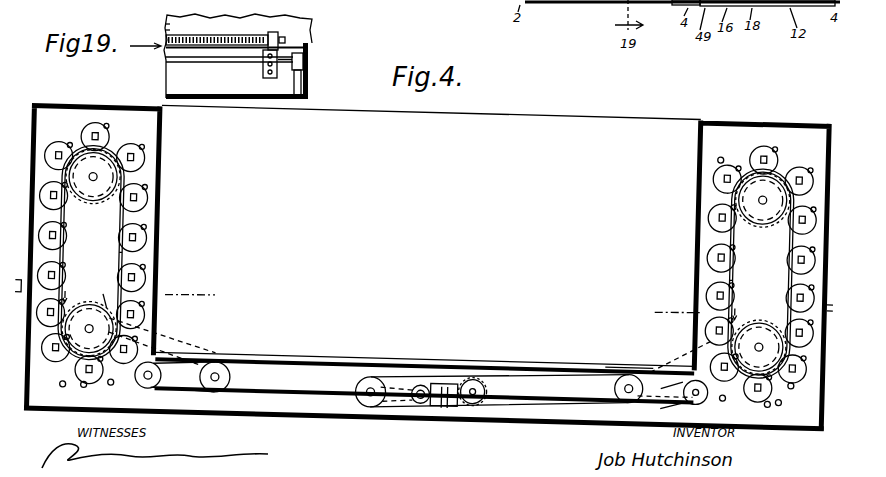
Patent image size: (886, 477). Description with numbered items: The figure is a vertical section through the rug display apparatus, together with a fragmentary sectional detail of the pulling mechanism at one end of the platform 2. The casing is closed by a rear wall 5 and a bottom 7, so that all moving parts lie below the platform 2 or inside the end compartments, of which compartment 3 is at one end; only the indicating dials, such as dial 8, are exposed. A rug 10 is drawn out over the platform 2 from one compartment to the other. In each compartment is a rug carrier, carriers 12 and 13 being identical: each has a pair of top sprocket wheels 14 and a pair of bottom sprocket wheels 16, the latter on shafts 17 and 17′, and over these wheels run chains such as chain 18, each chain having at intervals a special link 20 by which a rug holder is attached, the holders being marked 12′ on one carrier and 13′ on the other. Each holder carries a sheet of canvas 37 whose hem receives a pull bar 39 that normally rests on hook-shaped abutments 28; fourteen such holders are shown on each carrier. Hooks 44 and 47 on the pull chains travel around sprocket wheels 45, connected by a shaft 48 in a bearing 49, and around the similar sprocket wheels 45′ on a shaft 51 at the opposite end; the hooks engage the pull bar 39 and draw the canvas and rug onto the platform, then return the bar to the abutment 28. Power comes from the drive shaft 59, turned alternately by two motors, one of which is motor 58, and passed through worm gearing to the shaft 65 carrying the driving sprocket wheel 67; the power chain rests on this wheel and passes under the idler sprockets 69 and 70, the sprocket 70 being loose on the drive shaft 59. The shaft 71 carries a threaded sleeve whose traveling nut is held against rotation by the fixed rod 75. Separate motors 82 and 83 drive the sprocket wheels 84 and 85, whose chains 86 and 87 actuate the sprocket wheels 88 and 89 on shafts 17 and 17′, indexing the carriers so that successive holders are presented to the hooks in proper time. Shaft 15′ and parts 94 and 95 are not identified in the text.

In FIG. 19, the platform 2 is at (306, 45).
In FIG. 4, the platform 2 is at (350, 348).
In FIG. 4, the end compartment 3 is at (162, 140).
In FIG. 4, the rear wall 5 is at (527, 103).
In FIG. 4, the bottom 7 is at (510, 410).
In FIG. 4, the indicating dial 8 is at (746, 157).
In FIG. 19, the rug 10 is at (222, 35).
In FIG. 4, the rug carrier 12 is at (778, 143).
In FIG. 4, the rug holder 12′ is at (718, 240).
In FIG. 19, the rug carrier 13 is at (144, 15).
In FIG. 4, the rug carrier 13 is at (112, 148).
In FIG. 4, the rug holder 13′ is at (144, 236).
In FIG. 4, the top sprocket wheel 14 is at (97, 200).
In FIG. 4, the upper sprocket wheel 15′ is at (94, 176).
In FIG. 4, the bottom sprocket wheel 16 is at (412, 290).
In FIG. 4, the shaft 17 is at (758, 346).
In FIG. 4, the shaft 17′ is at (90, 320).
In FIG. 4, the chain 18 is at (130, 258).
In FIG. 4, the special link 20 is at (104, 372).
In FIG. 4, the hook-shaped abutment 28 is at (71, 386).
In FIG. 19, the sheet of canvas 37 is at (190, 36).
In FIG. 19, the pull bar 39 is at (283, 37).
In FIG. 4, the pull bar 39 is at (92, 386).
In FIG. 19, the hook 44 is at (271, 32).
In FIG. 4, the sprocket wheel 45 is at (120, 383).
In FIG. 19, the sprocket wheel 45′ is at (268, 70).
In FIG. 4, the sprocket wheel 45′ is at (684, 386).
In FIG. 4, the hook 47 is at (729, 405).
In FIG. 4, the shaft 48 is at (156, 385).
In FIG. 19, the bearing 49 is at (156, 12).
In FIG. 19, the shaft 51 is at (222, 63).
In FIG. 4, the shaft 51 is at (705, 387).
In FIG. 4, the motor 58 is at (395, 370).
In FIG. 4, the drive shaft 59 is at (380, 368).
In FIG. 4, the shaft 65 is at (428, 395).
In FIG. 4, the driving sprocket wheel 67 is at (402, 398).
In FIG. 4, the idler sprocket 69 is at (492, 376).
In FIG. 4, the idler sprocket 70 is at (424, 385).
In FIG. 4, the shaft 71 is at (460, 397).
In FIG. 4, the fixed rod 75 is at (762, 199).
In FIG. 4, the motor 82 is at (650, 352).
In FIG. 4, the motor 83 is at (215, 386).
In FIG. 4, the sprocket wheel 84 is at (638, 388).
In FIG. 4, the sprocket wheel 85 is at (222, 357).
In FIG. 4, the chain 86 is at (674, 366).
In FIG. 4, the chain 87 is at (178, 340).
In FIG. 4, the sprocket wheel 88 is at (793, 393).
In FIG. 4, the sprocket wheel 89 is at (108, 296).
In FIG. 4, the rod 94 is at (456, 398).
In FIG. 4, the rod 95 is at (449, 398).